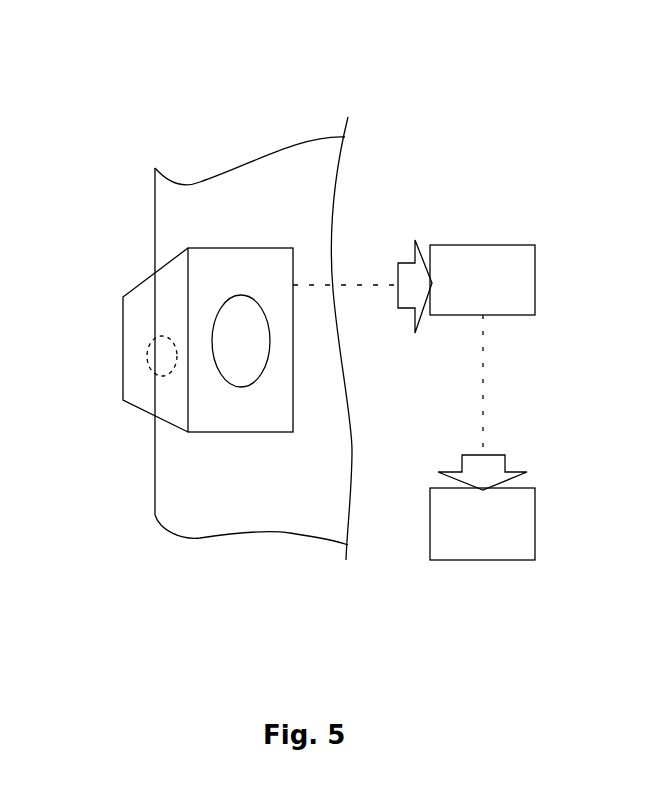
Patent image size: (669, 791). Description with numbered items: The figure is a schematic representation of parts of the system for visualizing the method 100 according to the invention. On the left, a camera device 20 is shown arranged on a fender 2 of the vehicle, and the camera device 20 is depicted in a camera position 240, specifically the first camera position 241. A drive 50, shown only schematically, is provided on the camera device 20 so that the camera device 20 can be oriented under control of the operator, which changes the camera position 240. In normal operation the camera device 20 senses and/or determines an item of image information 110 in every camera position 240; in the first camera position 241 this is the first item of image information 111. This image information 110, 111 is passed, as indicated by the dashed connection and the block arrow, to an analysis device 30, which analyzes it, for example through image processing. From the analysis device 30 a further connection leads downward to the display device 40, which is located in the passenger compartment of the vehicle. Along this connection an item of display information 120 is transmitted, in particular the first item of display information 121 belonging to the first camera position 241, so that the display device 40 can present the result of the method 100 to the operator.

The fender 2 is at (149, 115).
The camera device 20 is at (247, 247).
The analysis device 30 is at (470, 295).
The display device 40 is at (470, 537).
The drive 50 is at (148, 374).
The method 100 is at (596, 194).
The image information 110 is at (443, 236).
The first image information 111 is at (402, 263).
The display information 120 is at (525, 440).
The first display information 121 is at (505, 458).
The camera position 240 is at (241, 331).
The first camera position 241 is at (241, 331).